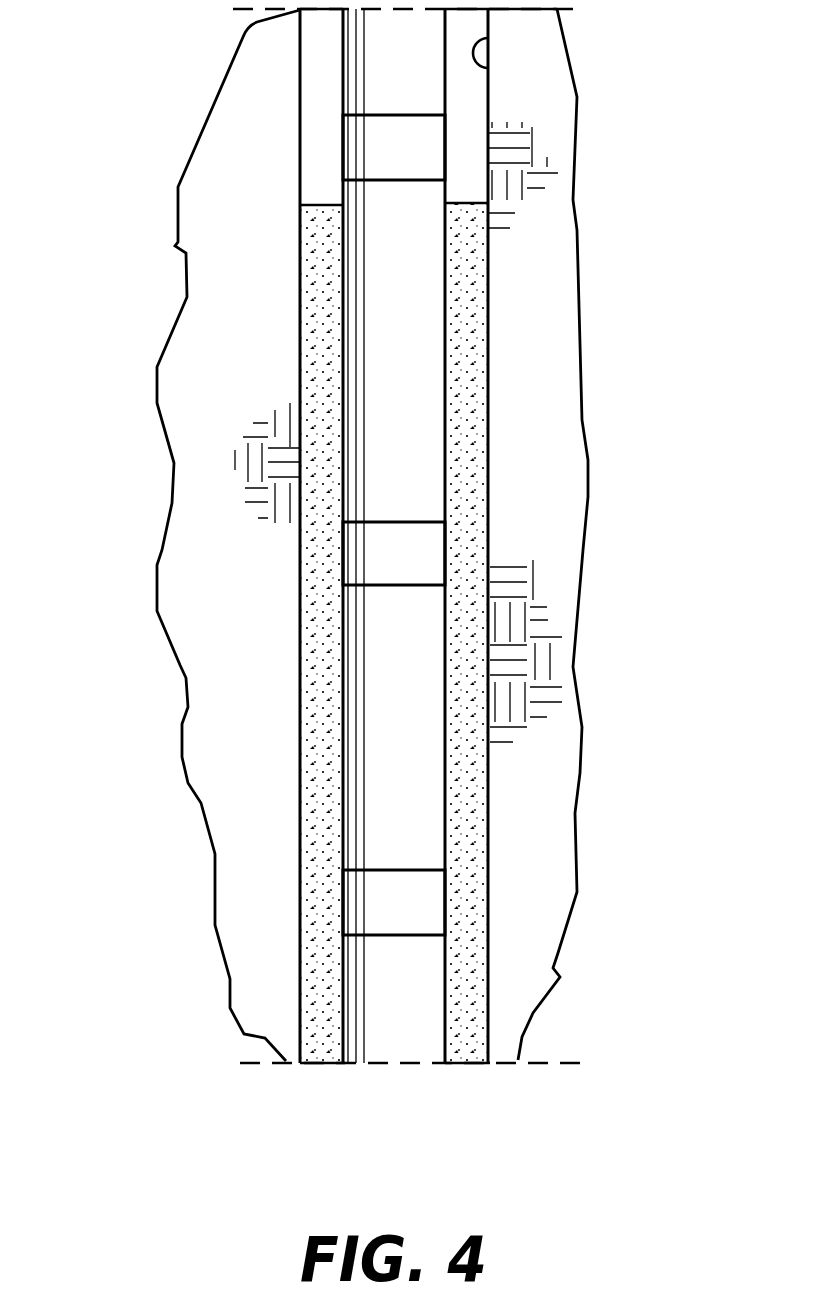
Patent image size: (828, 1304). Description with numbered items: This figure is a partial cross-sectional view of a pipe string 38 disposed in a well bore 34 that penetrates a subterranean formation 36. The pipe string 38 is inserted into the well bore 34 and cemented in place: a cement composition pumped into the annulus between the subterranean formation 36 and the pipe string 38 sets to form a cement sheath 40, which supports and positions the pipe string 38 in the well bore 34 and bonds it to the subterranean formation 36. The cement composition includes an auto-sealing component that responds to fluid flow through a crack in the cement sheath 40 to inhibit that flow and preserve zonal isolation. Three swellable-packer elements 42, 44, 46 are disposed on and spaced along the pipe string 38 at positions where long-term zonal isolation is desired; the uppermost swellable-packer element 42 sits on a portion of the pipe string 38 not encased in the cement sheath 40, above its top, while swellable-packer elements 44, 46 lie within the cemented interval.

The well bore 34 is at (488, 37).
The subterranean formation 36 is at (215, 375).
The pipe string 38 is at (447, 417).
The cement sheath 40 is at (330, 237).
The swellable-packer element 42 is at (445, 130).
The swellable-packer element 44 is at (447, 535).
The swellable-packer element 46 is at (447, 886).